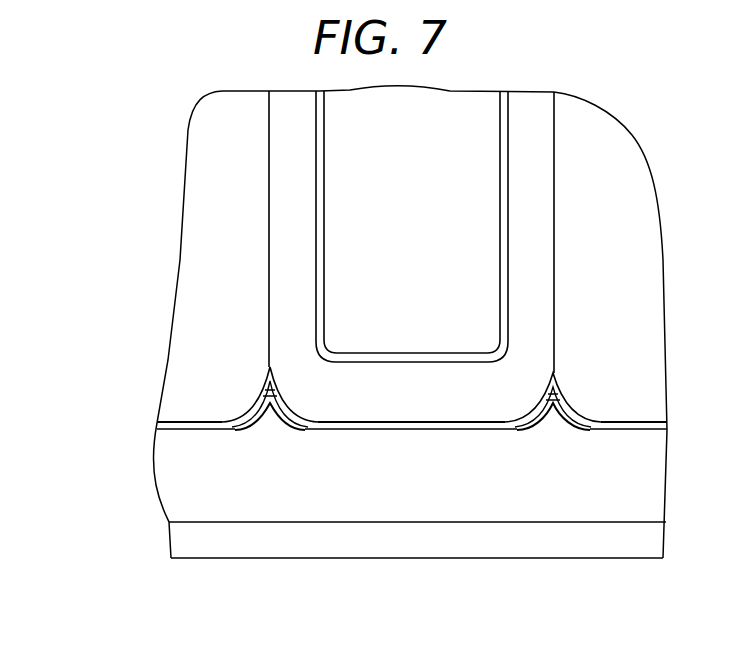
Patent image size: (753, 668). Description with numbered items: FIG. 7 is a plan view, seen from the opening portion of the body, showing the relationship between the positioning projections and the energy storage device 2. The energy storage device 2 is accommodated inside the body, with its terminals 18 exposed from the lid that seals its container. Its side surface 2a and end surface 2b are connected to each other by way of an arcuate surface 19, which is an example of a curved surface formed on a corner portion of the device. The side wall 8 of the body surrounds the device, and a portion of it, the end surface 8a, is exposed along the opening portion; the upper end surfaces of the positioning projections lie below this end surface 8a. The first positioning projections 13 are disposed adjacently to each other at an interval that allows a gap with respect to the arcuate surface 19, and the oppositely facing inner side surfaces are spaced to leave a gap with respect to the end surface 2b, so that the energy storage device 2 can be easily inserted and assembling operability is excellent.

The terminal 18 is at (342, 190).
The side surface 2a is at (269, 237).
The energy storage device 2 is at (287, 302).
The arcuate surface 19 is at (265, 393).
The first positioning projection 13 is at (265, 420).
The end surface 2b is at (412, 430).
The end surface 8a is at (190, 494).
The side wall 8 is at (342, 560).